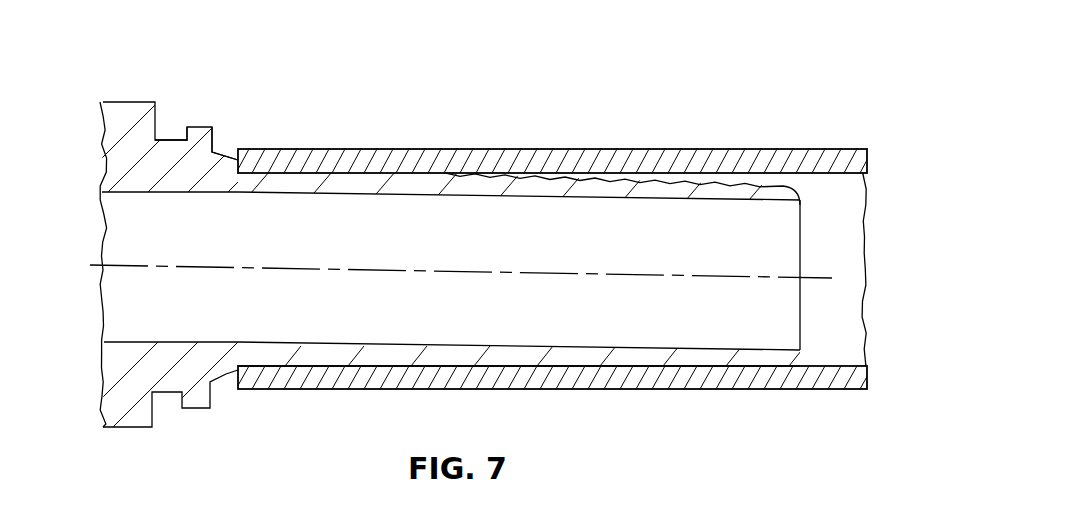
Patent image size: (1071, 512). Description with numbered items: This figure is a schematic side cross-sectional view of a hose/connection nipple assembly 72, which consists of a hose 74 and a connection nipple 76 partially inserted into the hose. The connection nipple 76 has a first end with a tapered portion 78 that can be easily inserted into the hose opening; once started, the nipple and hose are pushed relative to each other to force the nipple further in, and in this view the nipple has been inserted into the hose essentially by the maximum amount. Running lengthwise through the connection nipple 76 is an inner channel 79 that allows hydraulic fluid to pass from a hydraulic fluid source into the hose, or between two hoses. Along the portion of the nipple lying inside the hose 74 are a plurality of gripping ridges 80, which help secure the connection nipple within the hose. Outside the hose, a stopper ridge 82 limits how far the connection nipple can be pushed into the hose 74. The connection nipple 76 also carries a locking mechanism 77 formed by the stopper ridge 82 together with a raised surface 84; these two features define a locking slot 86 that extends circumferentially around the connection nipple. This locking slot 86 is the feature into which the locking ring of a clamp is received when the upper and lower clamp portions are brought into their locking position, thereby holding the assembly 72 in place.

The hose/connection nipple assembly 72 is at (488, 82).
The hose 74 is at (283, 390).
The connection nipple 76 is at (105, 405).
The locking mechanism 77 is at (160, 166).
The tapered portion 78 is at (737, 185).
The inner channel 79 is at (657, 303).
The gripping ridges 80 is at (575, 177).
The stopper ridge 82 is at (213, 152).
The raised surface 84 is at (124, 101).
The locking slot 86 is at (184, 128).